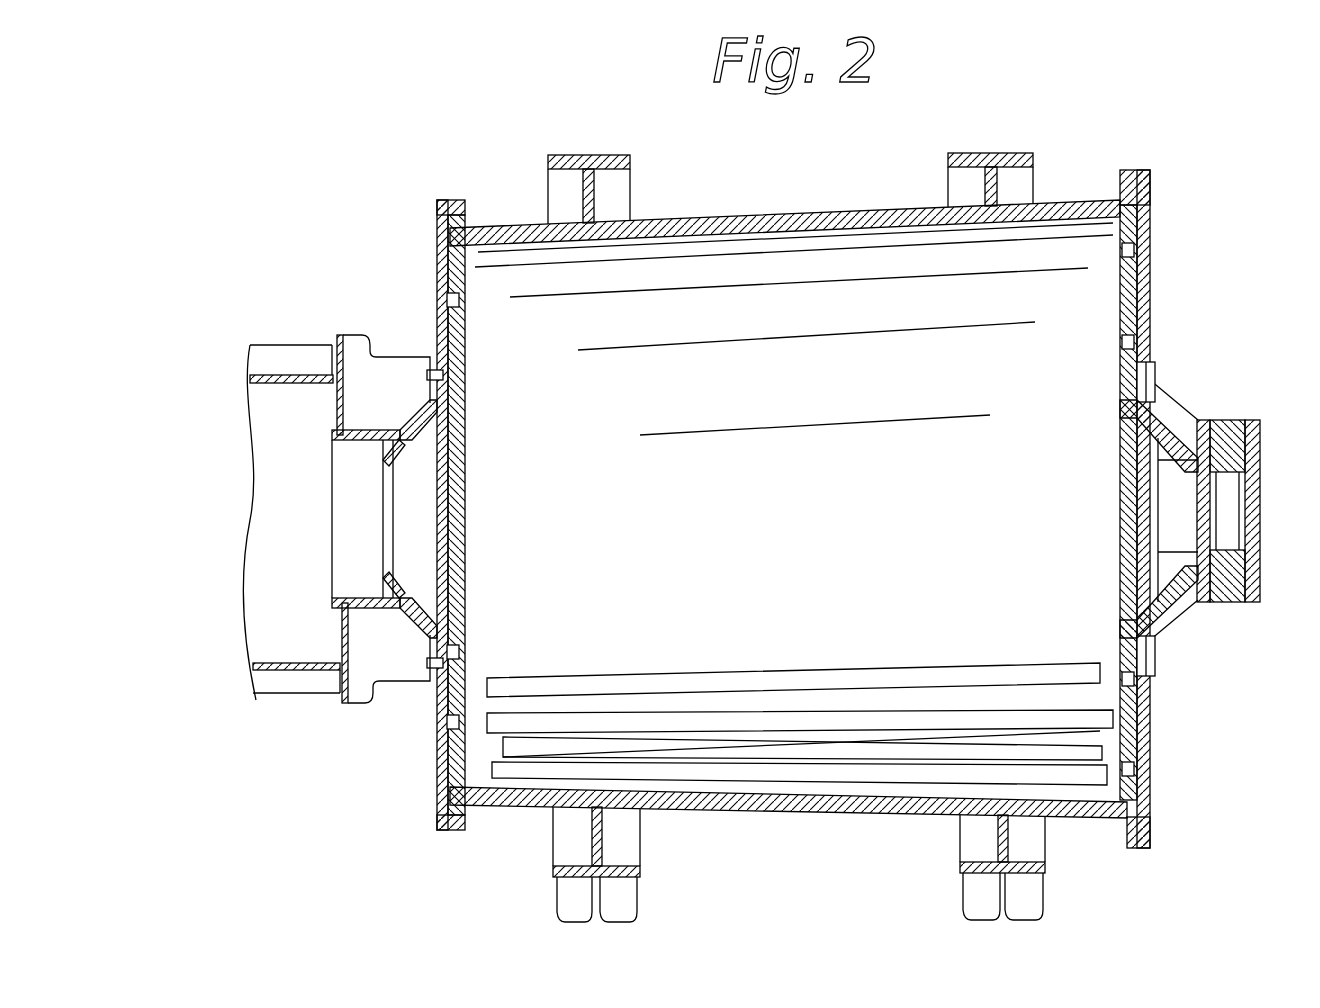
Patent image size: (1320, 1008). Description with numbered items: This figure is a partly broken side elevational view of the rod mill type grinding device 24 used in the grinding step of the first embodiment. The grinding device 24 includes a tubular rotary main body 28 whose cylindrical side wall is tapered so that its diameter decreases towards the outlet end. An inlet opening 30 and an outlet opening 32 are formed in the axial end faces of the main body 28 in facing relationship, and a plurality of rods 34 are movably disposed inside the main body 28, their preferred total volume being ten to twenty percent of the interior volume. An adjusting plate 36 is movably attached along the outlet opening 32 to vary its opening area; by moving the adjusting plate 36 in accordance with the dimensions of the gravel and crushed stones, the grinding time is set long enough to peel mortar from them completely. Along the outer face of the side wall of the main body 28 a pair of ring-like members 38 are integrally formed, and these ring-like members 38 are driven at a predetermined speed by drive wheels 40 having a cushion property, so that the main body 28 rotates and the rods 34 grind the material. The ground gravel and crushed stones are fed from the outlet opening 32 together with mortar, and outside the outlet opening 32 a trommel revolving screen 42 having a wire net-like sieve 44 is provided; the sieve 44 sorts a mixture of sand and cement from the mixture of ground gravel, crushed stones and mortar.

The grinding device 24 is at (1155, 178).
The tubular rotary main body 28 is at (1082, 822).
The inlet opening 30 is at (1232, 503).
The outlet opening 32 is at (407, 450).
The rods 34 is at (808, 737).
The adjusting plate 36 is at (402, 452).
The ring-like members 38 is at (617, 155).
The drive wheels 40 is at (640, 897).
The trommel revolving screen 42 is at (285, 712).
The wire net-like sieve 44 is at (263, 660).